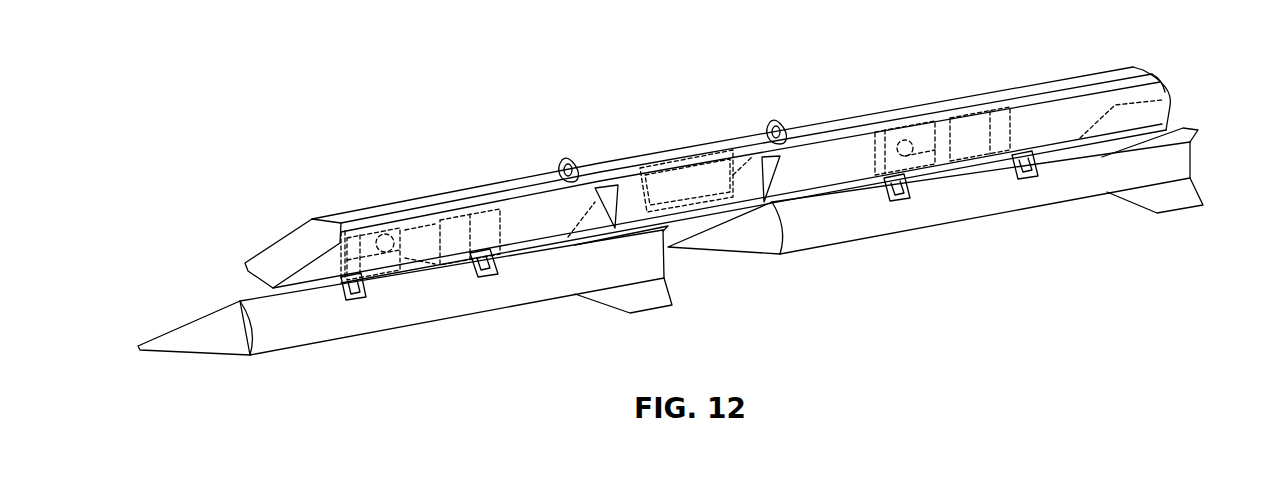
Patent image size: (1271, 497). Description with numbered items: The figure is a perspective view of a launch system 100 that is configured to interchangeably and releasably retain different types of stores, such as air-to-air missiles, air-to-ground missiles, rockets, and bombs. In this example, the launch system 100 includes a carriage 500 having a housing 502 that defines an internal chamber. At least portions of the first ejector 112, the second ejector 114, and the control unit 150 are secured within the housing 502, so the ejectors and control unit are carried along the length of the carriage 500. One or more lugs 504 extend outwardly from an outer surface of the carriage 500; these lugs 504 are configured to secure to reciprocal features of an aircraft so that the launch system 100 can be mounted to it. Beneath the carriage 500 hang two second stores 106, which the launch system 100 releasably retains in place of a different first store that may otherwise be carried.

The launch system 100 is at (688, 233).
The second stores 106 is at (297, 352).
The first ejector 112 is at (415, 208).
The second ejector 114 is at (948, 108).
The control unit 150 is at (675, 160).
The carriage 500 is at (255, 246).
The housing 502 is at (290, 233).
The lugs 504 is at (565, 158).